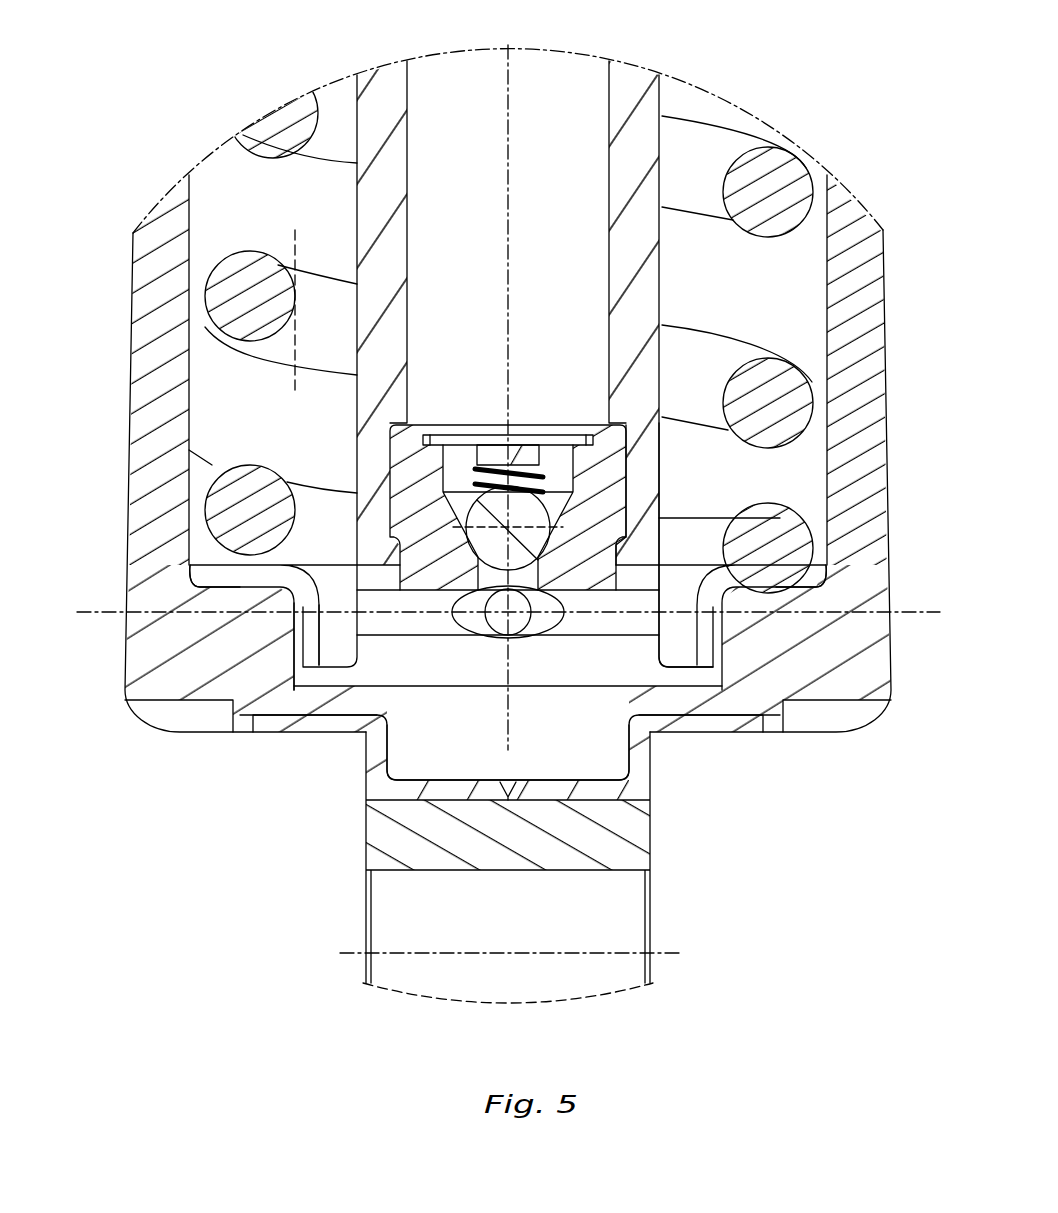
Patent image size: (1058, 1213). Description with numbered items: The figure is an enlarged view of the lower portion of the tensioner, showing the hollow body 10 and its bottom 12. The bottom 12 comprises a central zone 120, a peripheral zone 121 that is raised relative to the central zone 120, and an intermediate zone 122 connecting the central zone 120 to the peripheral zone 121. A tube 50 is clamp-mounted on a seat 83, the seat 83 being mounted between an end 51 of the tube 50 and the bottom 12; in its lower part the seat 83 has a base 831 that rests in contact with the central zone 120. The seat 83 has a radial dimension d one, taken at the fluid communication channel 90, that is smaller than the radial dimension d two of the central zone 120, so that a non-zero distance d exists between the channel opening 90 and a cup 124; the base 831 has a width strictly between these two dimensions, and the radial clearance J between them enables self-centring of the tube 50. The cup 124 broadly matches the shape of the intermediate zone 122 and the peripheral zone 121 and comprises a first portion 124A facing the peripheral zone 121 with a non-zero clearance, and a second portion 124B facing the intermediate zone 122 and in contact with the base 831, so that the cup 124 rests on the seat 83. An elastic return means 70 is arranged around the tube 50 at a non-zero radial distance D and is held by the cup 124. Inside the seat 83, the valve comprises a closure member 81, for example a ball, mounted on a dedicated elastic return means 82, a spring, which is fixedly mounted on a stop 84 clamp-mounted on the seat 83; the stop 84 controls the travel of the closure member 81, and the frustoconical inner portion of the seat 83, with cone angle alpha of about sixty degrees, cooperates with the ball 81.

The hollow body 10 is at (124, 416).
The bottom 12 is at (682, 703).
The tube 50 is at (649, 104).
The end of the tube 51 is at (645, 451).
The elastic return means 70 is at (226, 292).
The closure member 81 is at (543, 504).
The dedicated elastic return means 82 is at (464, 473).
The seat 83 is at (412, 450).
The stop 84 is at (494, 443).
The base 831 is at (686, 650).
The fluid communication channel 90 is at (438, 628).
The central zone 120 is at (652, 796).
The peripheral zone 121 is at (806, 596).
The intermediate zone 122 is at (725, 650).
The cup 124 is at (206, 558).
The first portion 124A is at (236, 578).
The second portion 124B is at (305, 652).